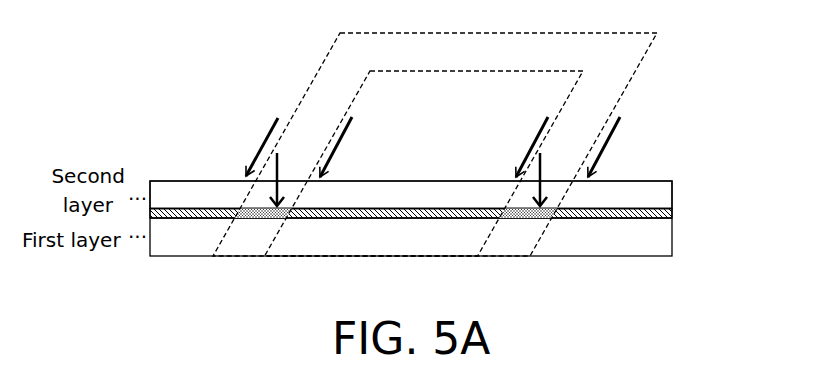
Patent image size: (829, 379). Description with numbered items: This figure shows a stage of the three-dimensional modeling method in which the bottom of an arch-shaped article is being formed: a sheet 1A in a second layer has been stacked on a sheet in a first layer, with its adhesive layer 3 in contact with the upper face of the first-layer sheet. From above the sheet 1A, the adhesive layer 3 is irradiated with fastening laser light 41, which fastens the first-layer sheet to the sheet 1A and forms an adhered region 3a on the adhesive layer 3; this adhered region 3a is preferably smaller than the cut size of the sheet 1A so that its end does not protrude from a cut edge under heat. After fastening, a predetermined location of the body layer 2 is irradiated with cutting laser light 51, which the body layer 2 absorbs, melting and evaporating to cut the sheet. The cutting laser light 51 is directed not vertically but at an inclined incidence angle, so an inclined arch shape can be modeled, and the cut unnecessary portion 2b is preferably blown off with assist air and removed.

The sheet 1A is at (705, 183).
The body layer 2 is at (673, 191).
The adhesive layer 3 is at (673, 214).
The adhered region 3a is at (284, 222).
The unnecessary portion 2b is at (151, 177).
The fastening laser light 41 is at (279, 163).
The cutting laser light 51 is at (272, 128).